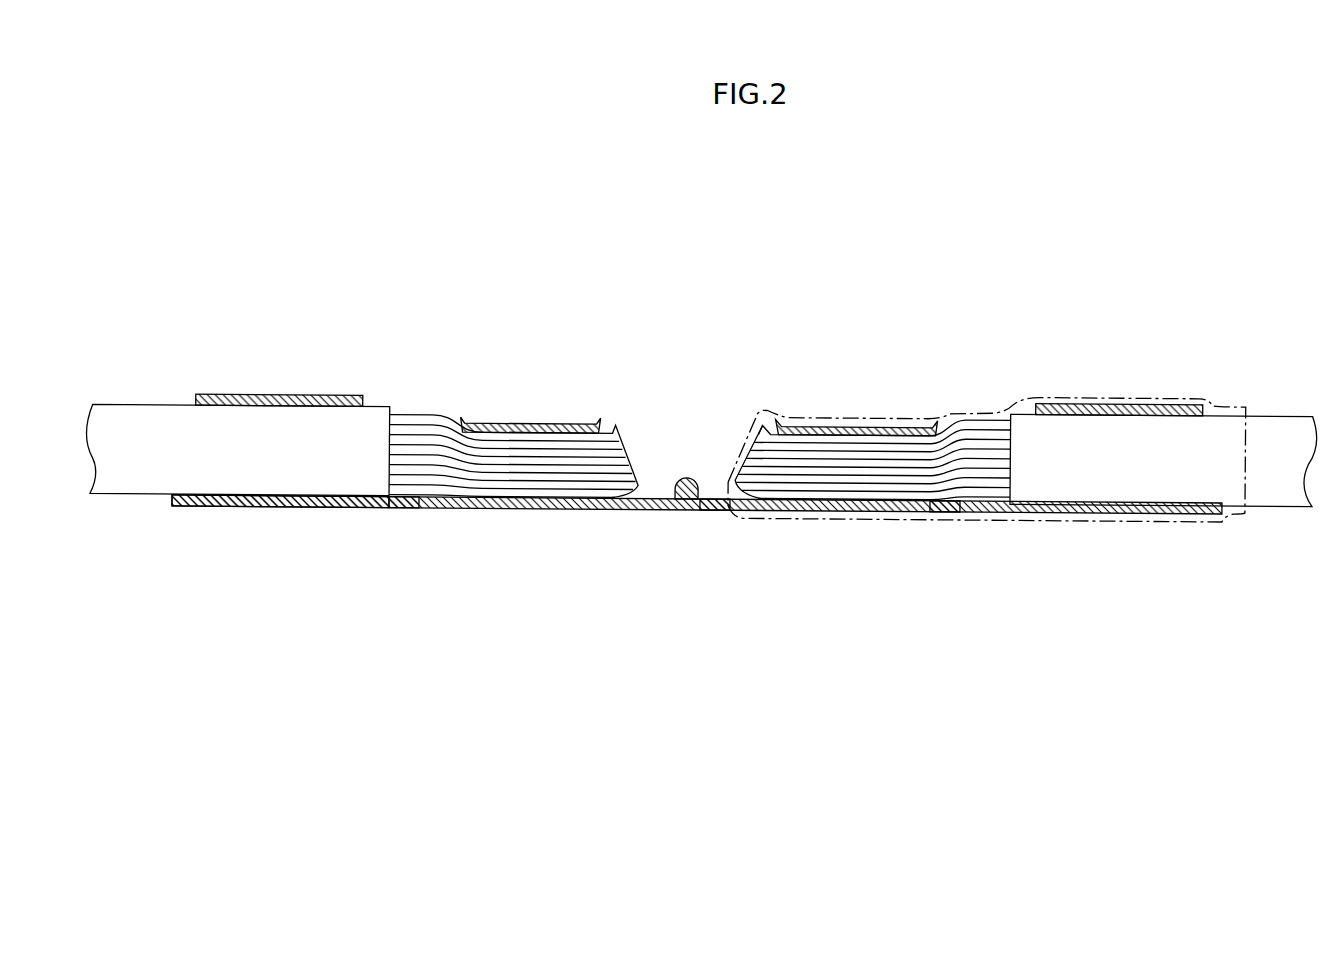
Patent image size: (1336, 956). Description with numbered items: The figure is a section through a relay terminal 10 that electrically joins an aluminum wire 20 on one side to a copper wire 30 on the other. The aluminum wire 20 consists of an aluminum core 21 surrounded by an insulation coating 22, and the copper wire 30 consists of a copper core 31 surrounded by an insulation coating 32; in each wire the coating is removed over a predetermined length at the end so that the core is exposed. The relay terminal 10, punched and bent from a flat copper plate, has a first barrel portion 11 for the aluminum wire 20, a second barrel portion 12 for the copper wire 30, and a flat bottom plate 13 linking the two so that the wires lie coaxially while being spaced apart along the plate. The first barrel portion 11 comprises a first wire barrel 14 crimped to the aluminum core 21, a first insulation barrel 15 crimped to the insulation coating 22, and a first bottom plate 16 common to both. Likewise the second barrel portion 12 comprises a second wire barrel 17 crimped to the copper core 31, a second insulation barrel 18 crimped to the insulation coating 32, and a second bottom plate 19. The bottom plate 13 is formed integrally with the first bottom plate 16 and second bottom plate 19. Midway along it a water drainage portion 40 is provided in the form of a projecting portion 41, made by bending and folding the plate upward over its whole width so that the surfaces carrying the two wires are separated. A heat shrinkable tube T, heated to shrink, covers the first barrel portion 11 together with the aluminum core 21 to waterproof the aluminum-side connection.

The relay terminal 10 is at (696, 586).
The first barrel portion 11 is at (995, 533).
The second barrel portion 12 is at (406, 528).
The bottom plate 13 is at (710, 510).
The first wire barrel 14 is at (835, 430).
The first insulation barrel 15 is at (1167, 408).
The first bottom plate 16 is at (945, 504).
The second wire barrel 17 is at (538, 426).
The second insulation barrel 18 is at (303, 400).
The second bottom plate 19 is at (333, 503).
The aluminum wire 20 is at (1293, 525).
The aluminum core 21 is at (868, 455).
The insulation coating 22 is at (1094, 437).
The copper wire 30 is at (153, 513).
The copper core 31 is at (548, 466).
The insulation coating 32 is at (227, 425).
The water drainage portion 40 is at (688, 478).
The projecting portion 41 is at (708, 438).
The heat shrinkable tube T is at (968, 411).